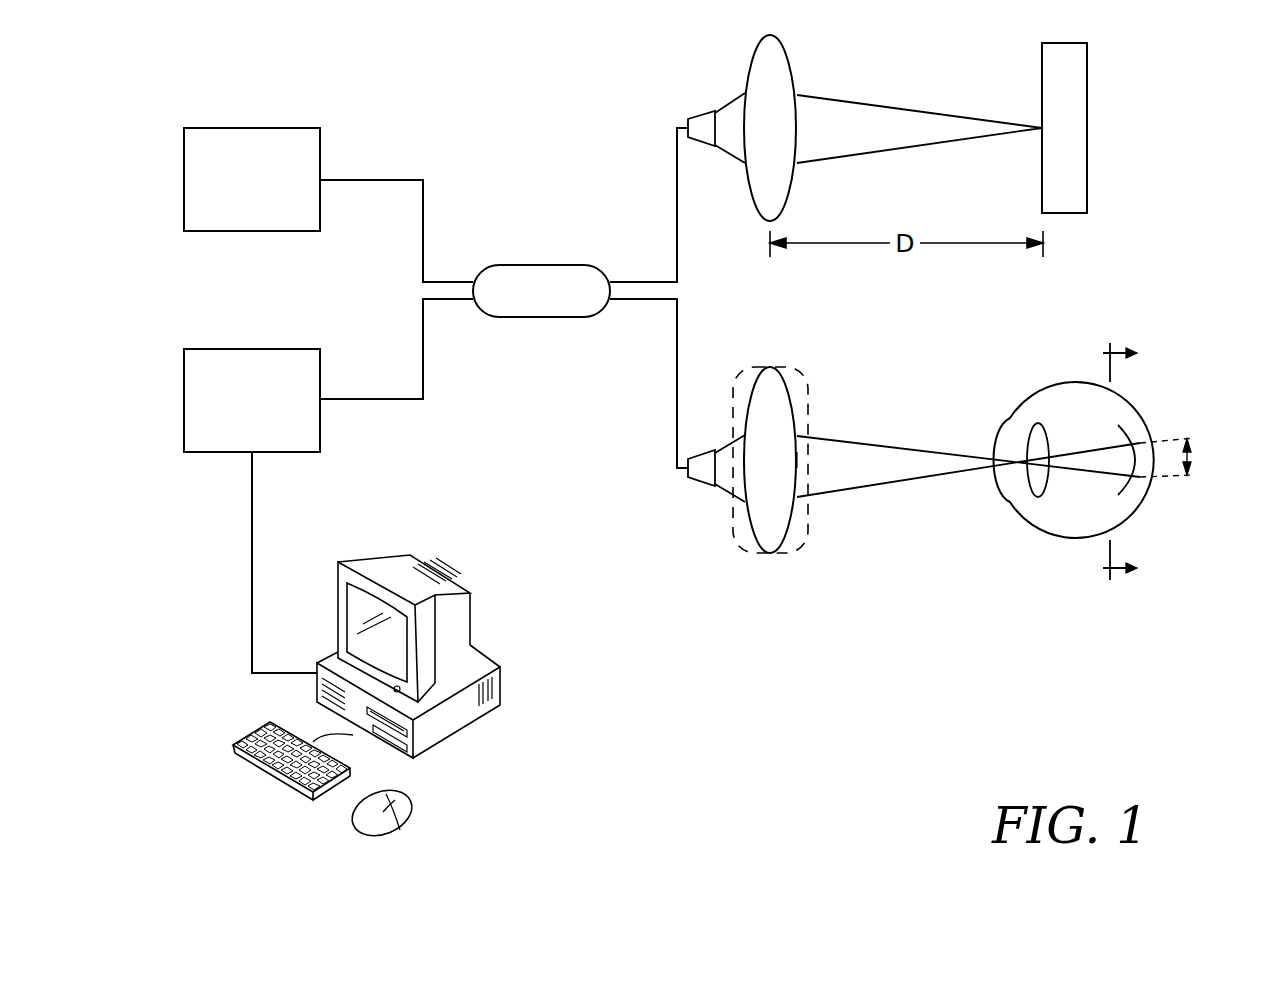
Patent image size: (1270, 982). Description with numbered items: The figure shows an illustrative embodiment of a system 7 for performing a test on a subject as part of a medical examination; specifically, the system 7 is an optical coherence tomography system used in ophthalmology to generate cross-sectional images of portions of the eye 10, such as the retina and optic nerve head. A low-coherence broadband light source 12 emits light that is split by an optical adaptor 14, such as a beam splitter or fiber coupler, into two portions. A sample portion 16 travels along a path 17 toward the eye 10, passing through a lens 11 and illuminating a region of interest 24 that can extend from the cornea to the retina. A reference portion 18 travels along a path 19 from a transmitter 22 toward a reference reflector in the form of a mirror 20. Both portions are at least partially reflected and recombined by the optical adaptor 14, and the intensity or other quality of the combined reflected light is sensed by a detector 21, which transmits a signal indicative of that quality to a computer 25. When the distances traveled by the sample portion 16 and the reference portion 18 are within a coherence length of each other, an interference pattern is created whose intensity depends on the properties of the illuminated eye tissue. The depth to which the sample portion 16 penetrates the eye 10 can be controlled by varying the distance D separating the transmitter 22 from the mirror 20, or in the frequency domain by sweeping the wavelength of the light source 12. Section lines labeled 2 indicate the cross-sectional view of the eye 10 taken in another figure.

The system 7 is at (762, 675).
The eye 10 is at (1075, 538).
The adjustable lens 11 is at (756, 473).
The light source 12 is at (238, 194).
The optical adaptor 14 is at (527, 304).
The sample portion 16 is at (894, 488).
The path 17 is at (677, 400).
The reference portion 18 is at (903, 105).
The path 19 is at (677, 185).
The mirror 20 is at (1050, 141).
The detector 21 is at (238, 412).
The transmitter 22 is at (756, 141).
The region of interest 24 is at (1187, 457).
The computer 25 is at (470, 730).
The section line 2- 2 is at (1132, 461).